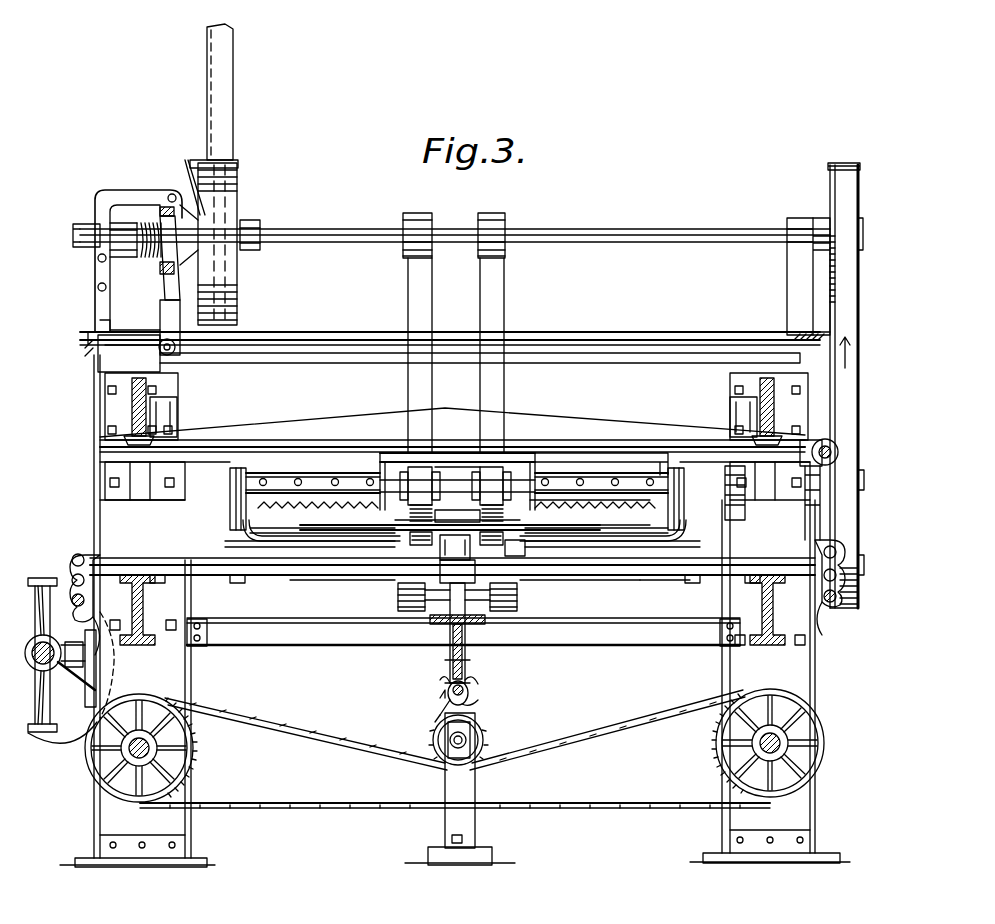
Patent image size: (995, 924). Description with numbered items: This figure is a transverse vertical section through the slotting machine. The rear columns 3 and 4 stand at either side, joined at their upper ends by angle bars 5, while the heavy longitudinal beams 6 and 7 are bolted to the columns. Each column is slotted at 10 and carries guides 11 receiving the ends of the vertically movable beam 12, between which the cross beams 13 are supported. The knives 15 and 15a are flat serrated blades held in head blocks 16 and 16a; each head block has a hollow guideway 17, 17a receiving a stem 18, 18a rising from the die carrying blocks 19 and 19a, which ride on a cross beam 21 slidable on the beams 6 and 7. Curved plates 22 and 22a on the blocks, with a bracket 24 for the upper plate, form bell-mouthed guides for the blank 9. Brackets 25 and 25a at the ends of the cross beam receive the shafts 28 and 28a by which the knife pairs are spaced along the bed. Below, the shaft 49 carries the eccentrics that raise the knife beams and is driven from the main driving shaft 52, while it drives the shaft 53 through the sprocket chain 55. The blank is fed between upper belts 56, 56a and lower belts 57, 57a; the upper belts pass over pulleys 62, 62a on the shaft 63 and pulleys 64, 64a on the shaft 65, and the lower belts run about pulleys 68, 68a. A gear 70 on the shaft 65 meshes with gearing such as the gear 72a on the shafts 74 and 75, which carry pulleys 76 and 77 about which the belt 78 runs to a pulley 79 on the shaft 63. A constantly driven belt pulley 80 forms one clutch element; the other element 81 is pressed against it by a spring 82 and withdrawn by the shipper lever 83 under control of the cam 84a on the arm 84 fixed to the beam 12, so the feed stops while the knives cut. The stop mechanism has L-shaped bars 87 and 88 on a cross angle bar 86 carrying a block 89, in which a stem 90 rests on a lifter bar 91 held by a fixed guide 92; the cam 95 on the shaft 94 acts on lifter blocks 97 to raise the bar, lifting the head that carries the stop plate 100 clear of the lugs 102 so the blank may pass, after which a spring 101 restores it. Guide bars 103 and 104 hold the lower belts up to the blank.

The rear column 3 is at (145, 825).
The rear column 4 is at (752, 816).
The angle bars 5 is at (90, 350).
The beam 6 is at (150, 605).
The beam 7 is at (762, 603).
The blank 9 is at (523, 540).
The slot 10 is at (137, 495).
The guides 11 is at (178, 410).
The beam 12 is at (130, 420).
The cross beams 13 is at (352, 425).
The knife 15 is at (318, 498).
The knife 15a is at (595, 496).
The head block 16 is at (370, 458).
The head block 16a is at (553, 460).
The hollow boss or guideway 17 is at (250, 475).
The hollow boss or guideway 17a is at (670, 480).
The finger or stem 18 is at (232, 522).
The finger or stem 18a is at (683, 515).
The die carrying block 19 is at (358, 575).
The die carrying block 19a is at (640, 575).
The cross beam 21 is at (573, 575).
The curved plate 22 is at (310, 547).
The curved plate 22a is at (612, 547).
The bracket 24 is at (245, 555).
The bracket 25 is at (78, 554).
The bracket 25a is at (830, 600).
The shaft 28 is at (95, 612).
The shaft 28a is at (825, 625).
The shaft 49 is at (130, 738).
The main driving shaft 52 is at (55, 668).
The shaft 53 is at (750, 752).
The sprocket chain 55 is at (563, 740).
The endless belt 56 is at (410, 290).
The endless belt 56a is at (503, 305).
The lower belt 57 is at (428, 605).
The lower belt 57a is at (510, 606).
The pulley 62 is at (408, 244).
The pulley 62a is at (487, 228).
The shaft 63 is at (600, 240).
The pulley 64 is at (420, 470).
The pulley 64a is at (490, 470).
The shaft 65 is at (458, 480).
The pulley 68 is at (400, 595).
The pulley 68a is at (500, 612).
The gear 70 is at (720, 492).
The gear 72a is at (752, 395).
The shaft 74 is at (862, 492).
The shaft 75 is at (862, 565).
The pulley 76 is at (850, 452).
The pulley 77 is at (860, 585).
The belt 78 is at (845, 322).
The pulley 79 is at (830, 172).
The belt pulley 80 is at (238, 172).
The clutch element 81 is at (205, 162).
The spring 82 is at (152, 258).
The shipper lever 83 is at (163, 300).
The cam arm 84 is at (180, 362).
The cam 84a is at (158, 340).
The cross angle bar 86 is at (612, 640).
The L-shaped bar 87 is at (448, 620).
The L-shaped bar 88 is at (468, 618).
The block 89 is at (460, 590).
The stem or shaft 90 is at (450, 668).
The lifter bar 91 is at (465, 668).
The fixed guide 92 is at (470, 655).
The shaft 94 is at (468, 693).
The cam 95 is at (470, 704).
The lifter blocks 97 is at (440, 690).
The stop plate 100 is at (500, 508).
The spring 101 is at (440, 585).
The lugs 102 is at (440, 555).
The guide bar 103 is at (425, 535).
The guide bar 104 is at (515, 550).